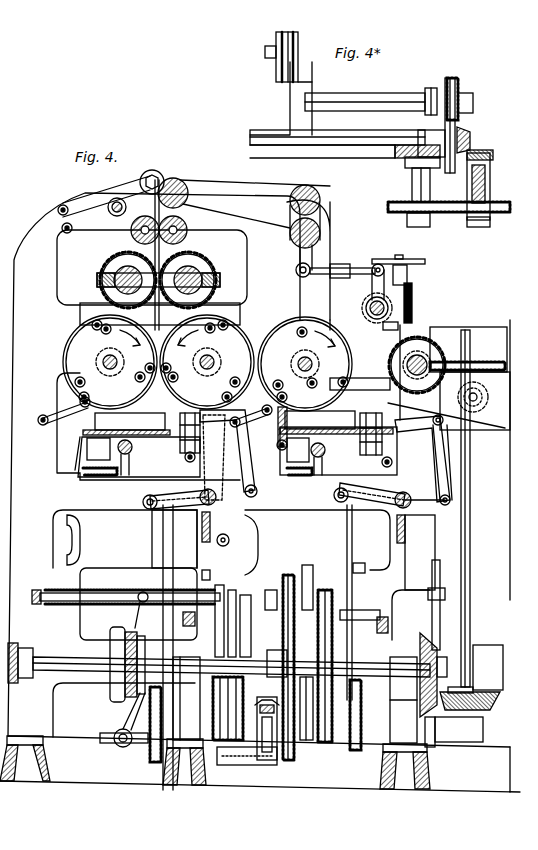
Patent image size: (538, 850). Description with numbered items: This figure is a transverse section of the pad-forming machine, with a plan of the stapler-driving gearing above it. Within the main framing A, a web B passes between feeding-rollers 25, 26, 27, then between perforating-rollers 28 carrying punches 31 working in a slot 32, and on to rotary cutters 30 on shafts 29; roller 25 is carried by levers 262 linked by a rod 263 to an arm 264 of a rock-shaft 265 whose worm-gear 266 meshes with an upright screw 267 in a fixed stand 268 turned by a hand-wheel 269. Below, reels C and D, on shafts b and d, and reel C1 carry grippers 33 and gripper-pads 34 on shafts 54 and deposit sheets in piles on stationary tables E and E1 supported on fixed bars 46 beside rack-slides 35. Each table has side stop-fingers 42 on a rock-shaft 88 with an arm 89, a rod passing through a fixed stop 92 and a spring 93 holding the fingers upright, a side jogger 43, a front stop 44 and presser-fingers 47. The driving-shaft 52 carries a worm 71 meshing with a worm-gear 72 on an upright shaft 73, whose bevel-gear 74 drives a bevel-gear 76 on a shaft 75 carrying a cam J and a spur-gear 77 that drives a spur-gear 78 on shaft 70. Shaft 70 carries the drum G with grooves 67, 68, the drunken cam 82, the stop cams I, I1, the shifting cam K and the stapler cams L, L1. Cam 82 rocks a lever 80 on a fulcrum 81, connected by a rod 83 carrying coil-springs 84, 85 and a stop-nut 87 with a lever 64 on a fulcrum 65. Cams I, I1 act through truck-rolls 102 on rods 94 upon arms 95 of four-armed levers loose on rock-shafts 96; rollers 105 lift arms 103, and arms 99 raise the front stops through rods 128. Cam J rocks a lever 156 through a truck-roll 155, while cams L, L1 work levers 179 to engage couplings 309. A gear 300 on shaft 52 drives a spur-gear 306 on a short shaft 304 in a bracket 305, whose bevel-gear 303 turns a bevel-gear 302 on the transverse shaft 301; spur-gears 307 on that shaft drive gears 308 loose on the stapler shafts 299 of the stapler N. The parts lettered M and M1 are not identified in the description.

The stapler N is at (277, 57).
The horizontal shaft 301 is at (337, 119).
In FIG. 4, the horizontal shaft 301 is at (360, 386).
The coupling 309 is at (428, 90).
The gear 308 is at (452, 78).
The stapler shaft 299 is at (473, 100).
The spur-gear 307 is at (451, 172).
The bevel-gear 302 is at (470, 130).
The bevel-gear 303 is at (480, 150).
The main framing A is at (345, 161).
In FIG. 4, the main framing A is at (109, 539).
The bracket 305 is at (490, 180).
The gear 300 is at (439, 212).
In FIG. 4, the gear 300 is at (415, 335).
The driving-shaft 52 is at (415, 227).
In FIG. 4, the driving-shaft 52 is at (420, 358).
The short horizontal shaft 304 is at (478, 227).
In FIG. 4, the short horizontal shaft 304 is at (456, 407).
The spur-gear 306 is at (505, 212).
In FIG. 4, the spur-gear 306 is at (495, 450).
In FIG. 4, the feeding-roller 27 is at (180, 190).
In FIG. 4, the perforating-roller 28 is at (195, 215).
In FIG. 4, the slot or row of holes 32 is at (188, 230).
In FIG. 4, the perforating-punches 31 is at (130, 233).
In FIG. 4, the cutter-shaft 29 is at (105, 272).
In FIG. 4, the rotary cutter 30 is at (156, 280).
In FIG. 4, the feeding-roller 25 is at (298, 190).
In FIG. 4, the feeding-roller 26 is at (318, 232).
In FIG. 4, the lever 262 is at (292, 215).
In FIG. 4, the web B is at (283, 169).
In FIG. 4, the rod 263 is at (356, 268).
In FIG. 4, the arm 264 is at (347, 279).
In FIG. 4, the hand-wheel 269 is at (403, 260).
In FIG. 4, the worm-gear 266 is at (362, 308).
In FIG. 4, the rock-shaft 265 is at (383, 328).
In FIG. 4, the fixed stand 268 is at (413, 288).
In FIG. 4, the endless screw 267 is at (413, 305).
In FIG. 4, the worm 71 is at (468, 349).
In FIG. 4, the worm-gear 72 is at (505, 362).
In FIG. 4, the delivery-reel C is at (110, 362).
In FIG. 4, the transferring-reel D is at (207, 362).
In FIG. 4, the delivery-reel C1 is at (305, 364).
In FIG. 4, the reel shaft b is at (110, 370).
In FIG. 4, the reel shaft d is at (207, 370).
In FIG. 4, the gripper-shaft 54 is at (121, 340).
In FIG. 4, the gripper-pad 34 is at (92, 324).
In FIG. 4, the gripper 33 is at (85, 330).
In FIG. 4, the front stop 44 is at (238, 423).
In FIG. 4, the jogger 43 is at (175, 420).
In FIG. 4, the presser 47 is at (62, 412).
In FIG. 4, the stop-fingers 42 is at (173, 438).
In FIG. 4, the table E is at (139, 457).
In FIG. 4, the fixed bar 46 is at (98, 449).
In FIG. 4, the rack-slide 35 is at (188, 455).
In FIG. 4, the rock-shaft 88 is at (85, 440).
In FIG. 4, the arm 89 is at (78, 452).
In FIG. 4, the spring 93 is at (86, 475).
In FIG. 4, the fixed stop 92 is at (120, 476).
In FIG. 4, the table E1 is at (338, 451).
In FIG. 4, the rock-shaft 96 is at (195, 505).
In FIG. 4, the arm 103 is at (341, 490).
In FIG. 4, the roller 105 is at (147, 508).
In FIG. 4, the rod 128 is at (452, 473).
In FIG. 4, the arm 99 is at (452, 500).
In FIG. 4, the arm 95 is at (345, 508).
In FIG. 4, the upright shaft 73 is at (478, 508).
In FIG. 4, the coil-spring 84 is at (130, 588).
In FIG. 4, the coil-spring 85 is at (179, 580).
In FIG. 4, the rod 83 is at (33, 592).
In FIG. 4, the stop 87 is at (37, 613).
In FIG. 4, the lever 80 is at (138, 612).
In FIG. 4, the horizontal shaft 70 is at (72, 672).
In FIG. 4, the drunken cam 82 is at (115, 698).
In FIG. 4, the fulcrum 81 is at (122, 747).
In FIG. 4, the cam I is at (157, 765).
In FIG. 4, the block M is at (168, 745).
In FIG. 4, the groove 67 is at (230, 742).
In FIG. 4, the lever 156 is at (268, 760).
In FIG. 4, the truck-roll 155 is at (278, 765).
In FIG. 4, the drum G is at (240, 630).
In FIG. 4, the groove 68 is at (248, 628).
In FIG. 4, the cam L is at (283, 640).
In FIG. 4, the cam J is at (275, 590).
In FIG. 4, the cam K is at (305, 590).
In FIG. 4, the spur-gear 78 is at (321, 664).
In FIG. 4, the spur-gear 77 is at (319, 724).
In FIG. 4, the rod 94 is at (338, 602).
In FIG. 4, the truck-roll 102 is at (277, 563).
In FIG. 4, the lever 64 is at (214, 567).
In FIG. 4, the fulcrum 65 is at (229, 540).
In FIG. 4, the block M1 is at (363, 602).
In FIG. 4, the cam I1 is at (356, 752).
In FIG. 4, the lever 179 is at (450, 596).
In FIG. 4, the cam L1 is at (447, 613).
In FIG. 4, the horizontal shaft 75 is at (395, 657).
In FIG. 4, the bevel-gear 76 is at (440, 640).
In FIG. 4, the bevel-gear 74 is at (478, 692).